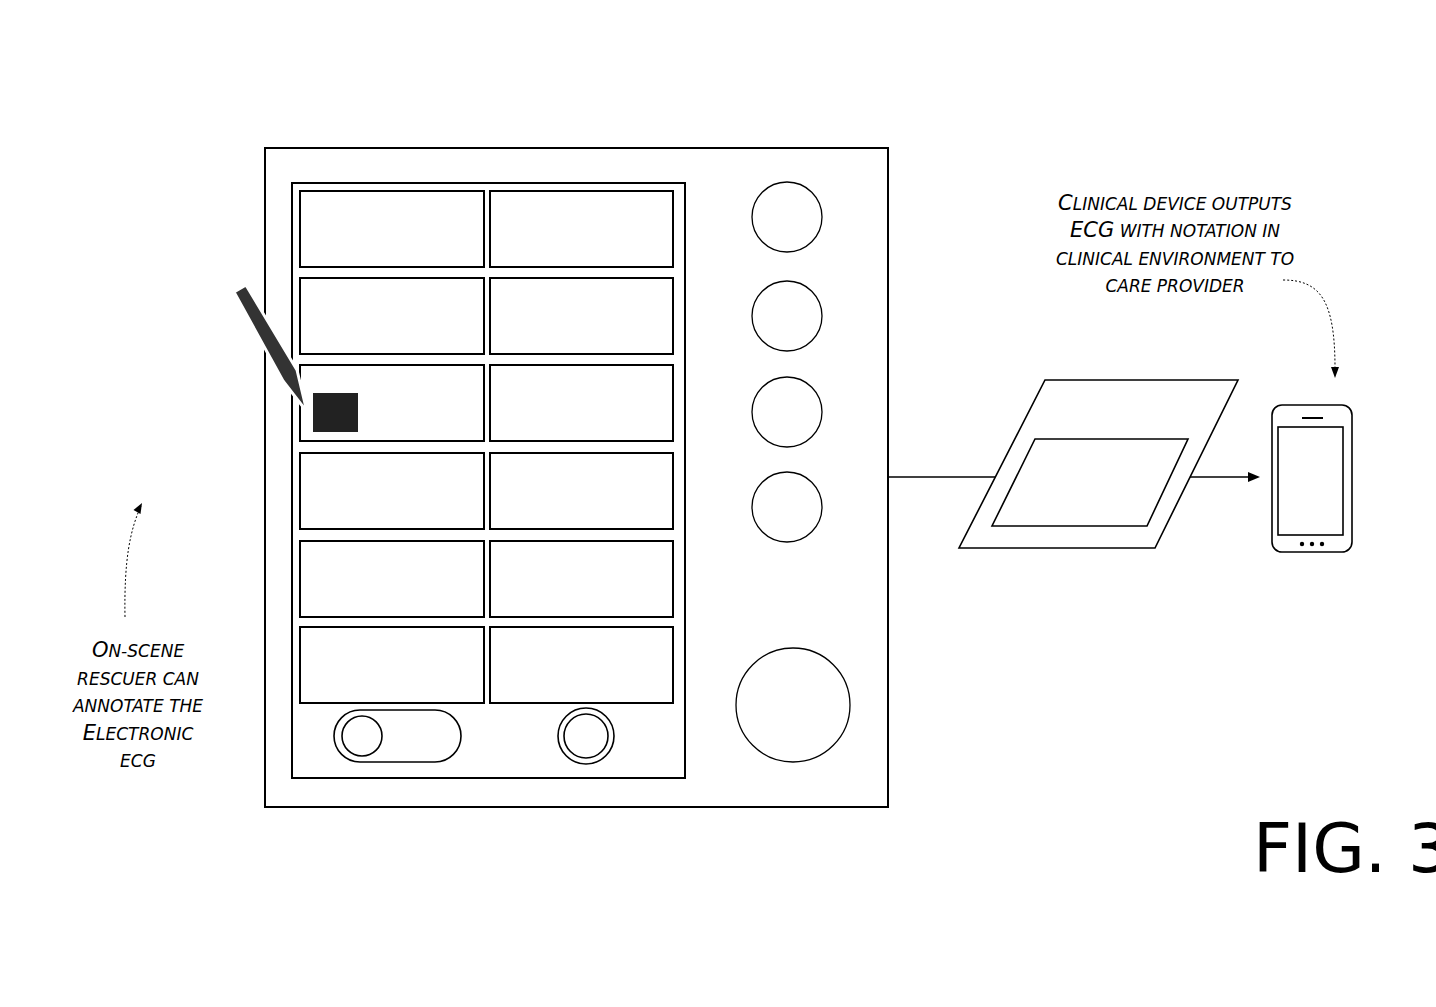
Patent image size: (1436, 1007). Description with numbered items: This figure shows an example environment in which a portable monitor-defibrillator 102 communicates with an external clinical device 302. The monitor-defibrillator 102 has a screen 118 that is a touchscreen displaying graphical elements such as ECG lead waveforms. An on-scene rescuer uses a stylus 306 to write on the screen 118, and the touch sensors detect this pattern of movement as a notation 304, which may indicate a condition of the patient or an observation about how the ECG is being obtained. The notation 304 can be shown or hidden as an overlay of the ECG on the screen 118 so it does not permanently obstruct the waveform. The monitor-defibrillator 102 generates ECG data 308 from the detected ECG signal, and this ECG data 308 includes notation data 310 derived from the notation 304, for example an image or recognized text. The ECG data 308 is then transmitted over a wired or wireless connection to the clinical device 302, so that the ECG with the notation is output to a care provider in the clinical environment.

The monitor-defibrillator 102 is at (526, 416).
The screen 118 is at (453, 402).
The clinical device 302 is at (1313, 555).
The notation 304 is at (334, 433).
The stylus 306 is at (230, 301).
The ECG data 308 is at (1098, 464).
The notation data 310 is at (1090, 482).